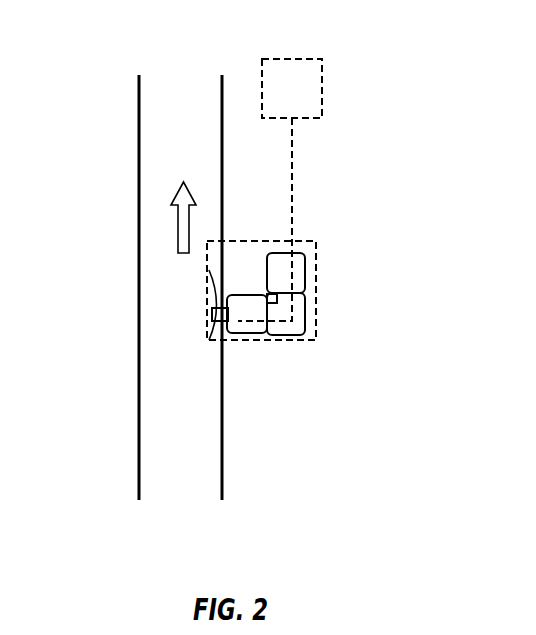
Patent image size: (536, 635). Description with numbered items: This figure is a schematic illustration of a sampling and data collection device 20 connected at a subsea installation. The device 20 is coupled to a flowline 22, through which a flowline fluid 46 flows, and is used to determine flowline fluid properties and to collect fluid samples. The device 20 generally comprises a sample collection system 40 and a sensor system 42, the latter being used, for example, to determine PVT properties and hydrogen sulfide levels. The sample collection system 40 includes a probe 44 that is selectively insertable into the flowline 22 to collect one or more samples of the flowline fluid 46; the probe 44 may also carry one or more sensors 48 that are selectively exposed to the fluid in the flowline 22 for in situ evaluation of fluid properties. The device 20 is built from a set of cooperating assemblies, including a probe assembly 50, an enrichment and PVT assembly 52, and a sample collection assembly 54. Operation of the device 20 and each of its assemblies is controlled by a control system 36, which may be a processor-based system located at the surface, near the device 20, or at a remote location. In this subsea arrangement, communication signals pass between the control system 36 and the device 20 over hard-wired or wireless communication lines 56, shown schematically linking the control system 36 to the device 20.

The sampling and data collection device 20 is at (316, 248).
The flowline 22 is at (222, 418).
The control system 36 is at (322, 88).
The sample collection system 40 is at (310, 270).
The sensor system 42 is at (270, 295).
The probe 44 is at (214, 338).
The flowline fluid 46 is at (177, 228).
The sensors 48 is at (212, 312).
The probe assembly 50 is at (247, 335).
The enrichment and PVT assembly 52 is at (307, 312).
The sample collection assembly 54 is at (307, 280).
The communication lines 56 is at (292, 185).